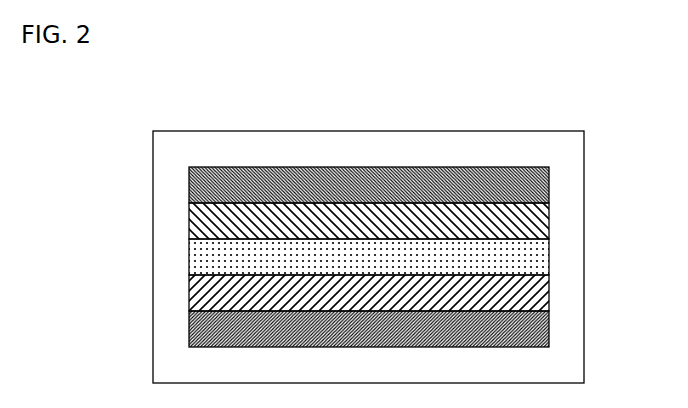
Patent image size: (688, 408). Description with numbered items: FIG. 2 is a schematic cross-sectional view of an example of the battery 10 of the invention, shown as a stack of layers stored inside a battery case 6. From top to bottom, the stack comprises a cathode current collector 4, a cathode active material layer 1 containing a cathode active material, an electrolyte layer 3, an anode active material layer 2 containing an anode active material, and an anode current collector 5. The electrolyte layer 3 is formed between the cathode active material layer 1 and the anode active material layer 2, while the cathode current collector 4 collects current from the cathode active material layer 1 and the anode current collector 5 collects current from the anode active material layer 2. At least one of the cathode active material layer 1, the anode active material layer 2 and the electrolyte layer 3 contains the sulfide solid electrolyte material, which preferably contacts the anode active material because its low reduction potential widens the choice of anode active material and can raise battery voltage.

The battery 10 is at (571, 92).
The battery case 6 is at (563, 145).
The cathode current collector 4 is at (545, 175).
The cathode active material layer 1 is at (545, 212).
The electrolyte layer 3 is at (545, 247).
The anode active material layer 2 is at (545, 283).
The anode current collector 5 is at (545, 318).